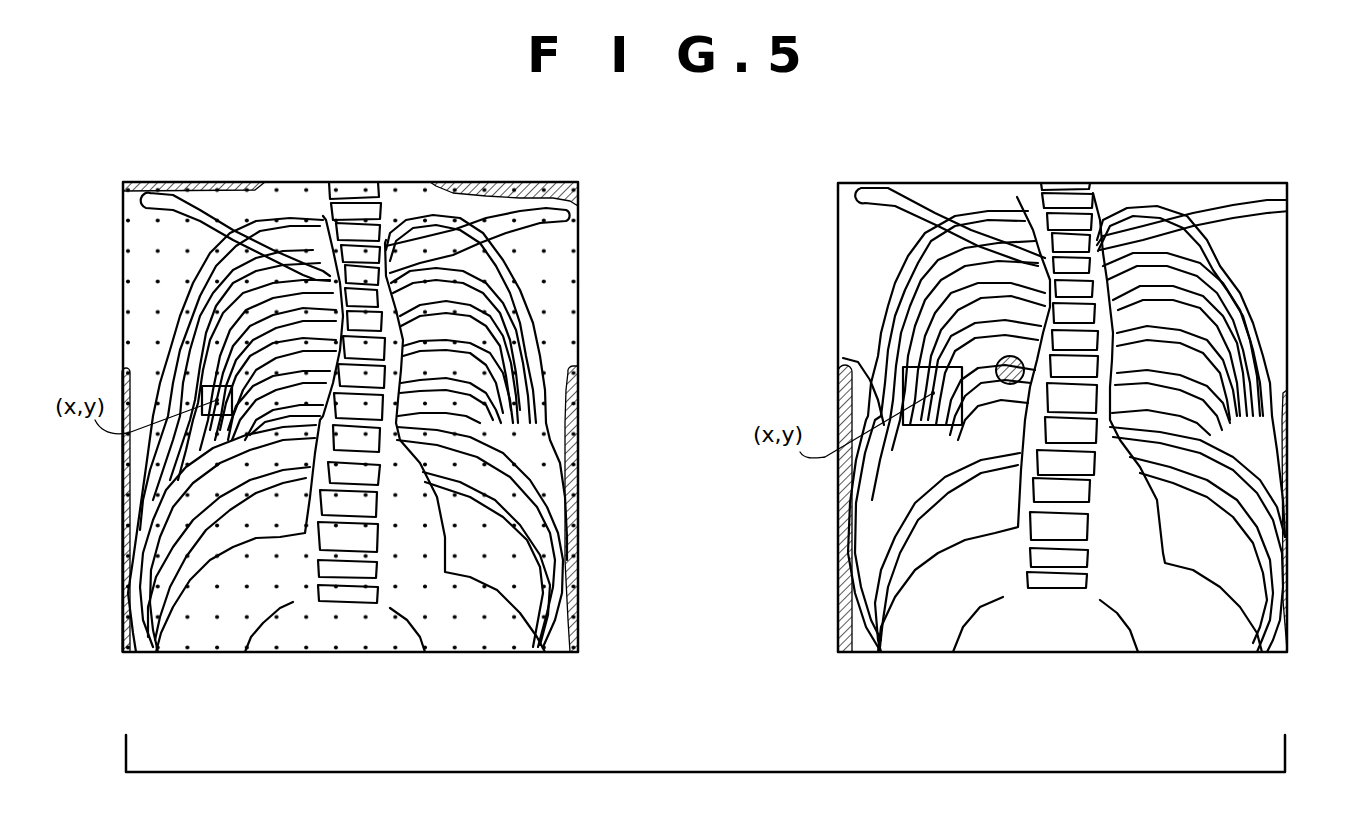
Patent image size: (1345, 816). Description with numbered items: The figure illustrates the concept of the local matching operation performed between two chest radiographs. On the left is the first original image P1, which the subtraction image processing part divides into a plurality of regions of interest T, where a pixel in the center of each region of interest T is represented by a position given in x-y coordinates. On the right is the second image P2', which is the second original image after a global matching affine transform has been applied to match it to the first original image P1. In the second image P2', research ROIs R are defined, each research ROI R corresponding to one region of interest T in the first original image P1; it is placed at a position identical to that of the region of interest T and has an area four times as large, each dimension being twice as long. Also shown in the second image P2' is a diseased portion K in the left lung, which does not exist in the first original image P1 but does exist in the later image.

The first original image P1 is at (516, 172).
The second image P2' is at (1084, 390).
The region of interest T is at (202, 391).
The research ROI R is at (902, 396).
The diseased portion K is at (1005, 355).